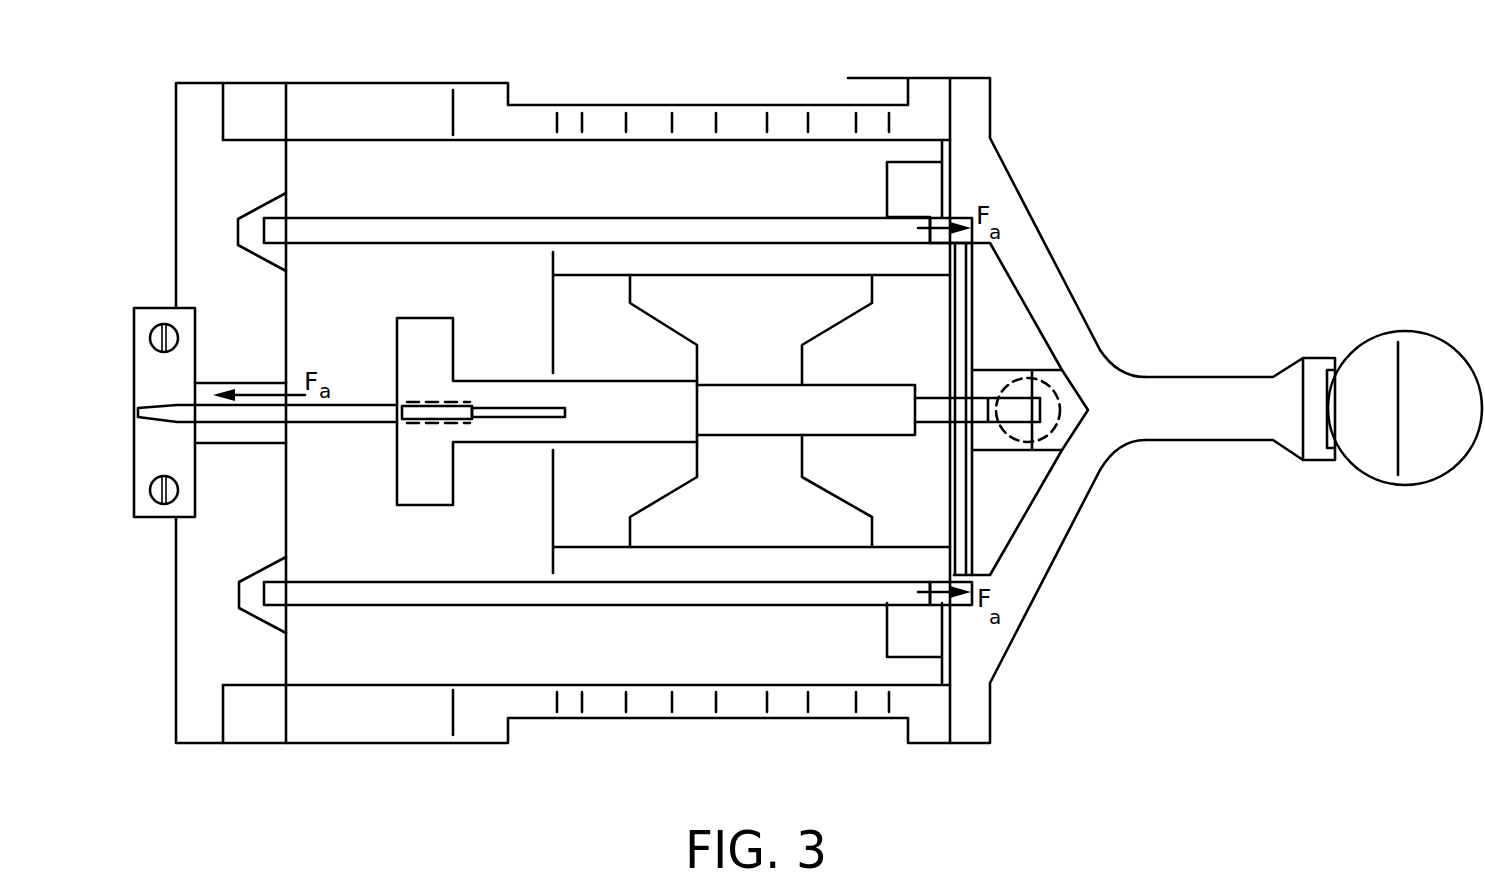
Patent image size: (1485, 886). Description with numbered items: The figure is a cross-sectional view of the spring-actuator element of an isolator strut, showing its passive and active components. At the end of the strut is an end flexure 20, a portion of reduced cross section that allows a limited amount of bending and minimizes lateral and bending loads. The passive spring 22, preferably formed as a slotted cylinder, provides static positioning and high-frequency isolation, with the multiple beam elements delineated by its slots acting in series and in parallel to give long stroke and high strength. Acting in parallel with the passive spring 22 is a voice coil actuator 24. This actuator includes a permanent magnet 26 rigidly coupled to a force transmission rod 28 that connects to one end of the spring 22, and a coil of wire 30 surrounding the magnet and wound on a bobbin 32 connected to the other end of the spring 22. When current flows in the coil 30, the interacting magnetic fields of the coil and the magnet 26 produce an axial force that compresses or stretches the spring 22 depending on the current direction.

The end flexure 20 is at (1187, 377).
The passive spring 22 is at (633, 105).
The voice coil actuator 24 is at (796, 168).
The permanent magnet 26 is at (768, 336).
The force transmission rod 28 is at (342, 422).
The coil of wire 30 is at (740, 270).
The bobbin 32 is at (573, 235).